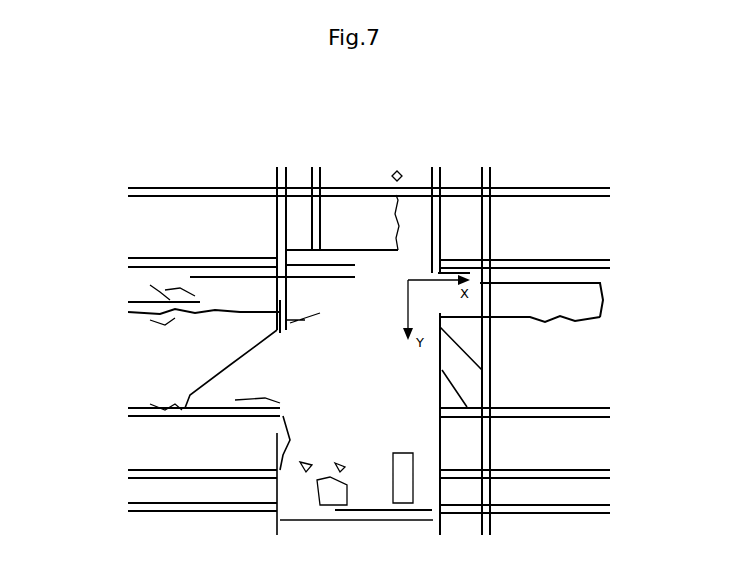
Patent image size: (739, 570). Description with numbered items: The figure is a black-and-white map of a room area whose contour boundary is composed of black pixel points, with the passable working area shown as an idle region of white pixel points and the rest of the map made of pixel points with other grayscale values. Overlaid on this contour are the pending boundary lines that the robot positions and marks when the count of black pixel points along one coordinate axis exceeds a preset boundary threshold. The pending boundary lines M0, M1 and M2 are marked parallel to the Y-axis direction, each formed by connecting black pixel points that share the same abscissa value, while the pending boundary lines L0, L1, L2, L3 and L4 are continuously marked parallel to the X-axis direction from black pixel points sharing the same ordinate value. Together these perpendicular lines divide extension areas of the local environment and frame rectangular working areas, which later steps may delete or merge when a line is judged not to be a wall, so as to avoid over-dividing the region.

The pending boundary line L0 is at (125, 257).
The pending boundary line L1 is at (125, 302).
The pending boundary line L2 is at (120, 407).
The pending boundary line L3 is at (120, 470).
The pending boundary line L4 is at (120, 503).
The pending boundary line M0 is at (274, 160).
The pending boundary line M1 is at (308, 160).
The pending boundary line M2 is at (435, 158).